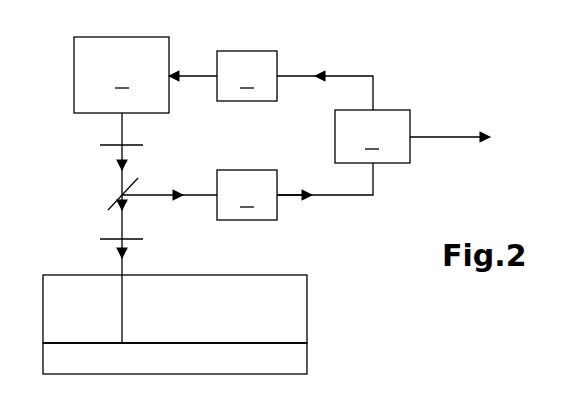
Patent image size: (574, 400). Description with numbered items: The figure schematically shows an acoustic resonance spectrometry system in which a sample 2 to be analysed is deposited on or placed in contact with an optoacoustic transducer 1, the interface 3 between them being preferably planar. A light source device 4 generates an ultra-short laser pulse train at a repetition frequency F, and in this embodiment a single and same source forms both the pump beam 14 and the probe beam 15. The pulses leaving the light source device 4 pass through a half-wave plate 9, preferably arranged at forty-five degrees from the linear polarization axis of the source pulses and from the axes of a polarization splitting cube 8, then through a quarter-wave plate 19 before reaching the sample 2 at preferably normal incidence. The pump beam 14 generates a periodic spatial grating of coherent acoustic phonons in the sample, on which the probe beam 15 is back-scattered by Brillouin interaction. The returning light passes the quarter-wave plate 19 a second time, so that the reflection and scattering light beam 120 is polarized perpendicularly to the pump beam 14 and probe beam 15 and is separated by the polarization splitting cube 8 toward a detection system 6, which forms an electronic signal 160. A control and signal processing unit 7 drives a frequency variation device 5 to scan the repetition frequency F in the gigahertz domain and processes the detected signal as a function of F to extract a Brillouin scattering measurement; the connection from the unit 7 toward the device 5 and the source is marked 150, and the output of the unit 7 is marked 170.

The optoacoustic transducer 1 is at (307, 354).
The sample 2 is at (307, 290).
The interface 3 is at (282, 343).
The light source device 4 is at (121, 75).
The frequency variation device 5 is at (247, 76).
The detection system 6 is at (247, 195).
The control and signal processing unit 7 is at (372, 136).
The polarization splitting cube 8 is at (108, 199).
The half-wave plate 9 is at (103, 144).
The pump beam 14 is at (126, 258).
The probe beam 15 is at (115, 166).
The quarter-wave plate 19 is at (100, 240).
The reflection and scattering light beam 120 is at (124, 216).
The control signal 150 is at (311, 78).
The electronic signal 160 is at (310, 198).
The output signal 170 is at (477, 132).